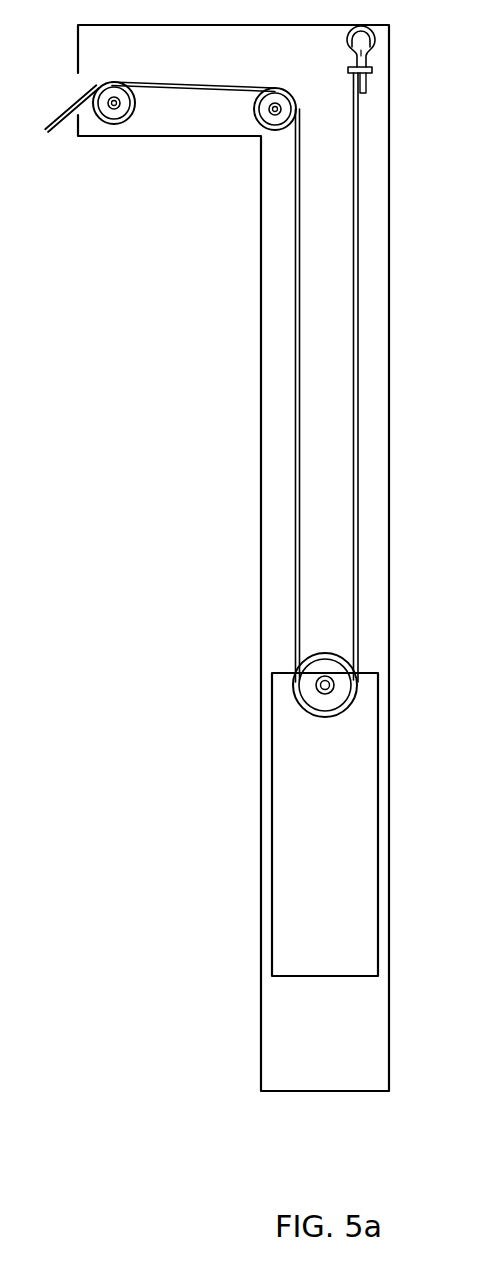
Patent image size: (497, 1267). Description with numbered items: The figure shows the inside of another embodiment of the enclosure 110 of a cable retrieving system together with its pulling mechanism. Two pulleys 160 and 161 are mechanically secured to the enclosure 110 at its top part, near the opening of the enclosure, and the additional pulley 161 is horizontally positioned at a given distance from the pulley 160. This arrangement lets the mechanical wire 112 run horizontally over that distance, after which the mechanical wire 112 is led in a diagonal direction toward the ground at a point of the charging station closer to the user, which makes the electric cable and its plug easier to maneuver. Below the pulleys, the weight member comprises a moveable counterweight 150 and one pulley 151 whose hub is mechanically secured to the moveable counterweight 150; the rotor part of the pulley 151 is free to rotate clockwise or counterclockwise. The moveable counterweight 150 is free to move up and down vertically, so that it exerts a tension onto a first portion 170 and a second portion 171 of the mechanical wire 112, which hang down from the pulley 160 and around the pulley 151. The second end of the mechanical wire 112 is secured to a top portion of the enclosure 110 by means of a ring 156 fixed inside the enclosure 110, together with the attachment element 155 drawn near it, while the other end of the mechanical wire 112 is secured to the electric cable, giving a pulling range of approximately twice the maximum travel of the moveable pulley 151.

The enclosure 110 is at (375, 450).
The mechanical wire 112 is at (70, 110).
The moveable counterweight 150 is at (283, 923).
The pulley 151 is at (320, 702).
The cable anchor 155 is at (349, 70).
The ring 156 is at (346, 34).
The pulley 160 is at (267, 110).
The additional pulley 161 is at (127, 106).
The first portion 170 is at (298, 380).
The second portion 171 is at (352, 436).